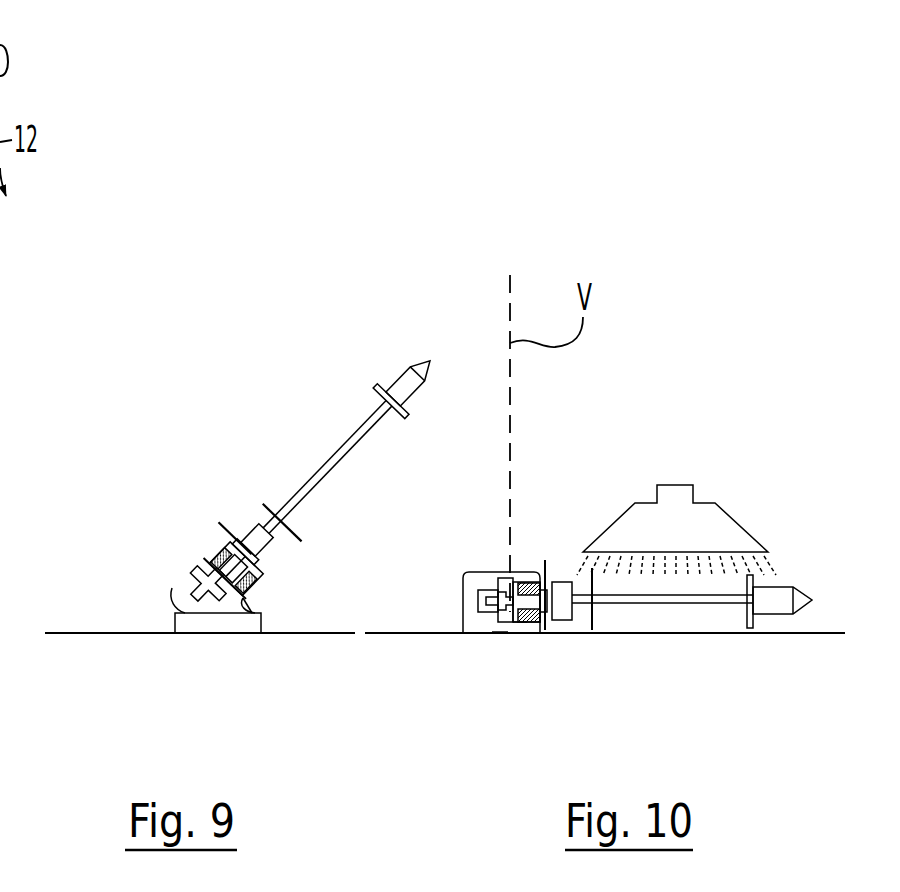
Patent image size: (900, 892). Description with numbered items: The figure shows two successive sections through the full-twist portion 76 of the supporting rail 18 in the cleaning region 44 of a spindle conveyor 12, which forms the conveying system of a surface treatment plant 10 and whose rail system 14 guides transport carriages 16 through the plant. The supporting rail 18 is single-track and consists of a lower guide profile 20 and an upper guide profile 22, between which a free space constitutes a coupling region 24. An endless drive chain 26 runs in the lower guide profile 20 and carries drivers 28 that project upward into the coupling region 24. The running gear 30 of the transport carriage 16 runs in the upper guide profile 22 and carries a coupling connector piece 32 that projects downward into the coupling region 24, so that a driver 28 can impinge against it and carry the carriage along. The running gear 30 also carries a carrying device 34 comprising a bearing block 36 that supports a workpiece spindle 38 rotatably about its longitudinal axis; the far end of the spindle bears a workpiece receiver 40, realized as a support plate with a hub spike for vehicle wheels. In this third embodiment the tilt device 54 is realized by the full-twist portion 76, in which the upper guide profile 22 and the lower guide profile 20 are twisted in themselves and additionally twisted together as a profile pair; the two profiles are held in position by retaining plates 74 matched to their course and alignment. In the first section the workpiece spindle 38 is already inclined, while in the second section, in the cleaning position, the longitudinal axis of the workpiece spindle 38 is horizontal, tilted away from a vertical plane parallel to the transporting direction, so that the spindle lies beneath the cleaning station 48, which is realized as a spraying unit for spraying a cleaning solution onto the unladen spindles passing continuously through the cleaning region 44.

In FIG. 9, the surface treatment plant 10 is at (290, 138).
In FIG. 10, the surface treatment plant 10 is at (728, 167).
In FIG. 9, the spindle conveyor 12 is at (328, 213).
In FIG. 10, the spindle conveyor 12 is at (780, 243).
In FIG. 9, the rail system 14 is at (155, 633).
In FIG. 10, the rail system 14 is at (450, 590).
In FIG. 9, the transport carriage 16 is at (246, 513).
In FIG. 10, the transport carriage 16 is at (580, 553).
In FIG. 9, the supporting rail 18 is at (250, 606).
In FIG. 10, the supporting rail 18 is at (530, 628).
In FIG. 9, the lower guide profile 20 is at (197, 580).
In FIG. 10, the lower guide profile 20 is at (503, 578).
In FIG. 9, the upper guide profile 22 is at (226, 546).
In FIG. 10, the upper guide profile 22 is at (561, 574).
In FIG. 9, the coupling region 24 is at (205, 562).
In FIG. 10, the coupling region 24 is at (505, 572).
In FIG. 9, the drive chain 26 is at (223, 605).
In FIG. 10, the drive chain 26 is at (470, 602).
In FIG. 9, the driver 28 is at (248, 612).
In FIG. 9, the running gear 30 is at (270, 565).
In FIG. 10, the running gear 30 is at (520, 627).
In FIG. 9, the coupling connector piece 32 is at (255, 596).
In FIG. 10, the coupling connector piece 32 is at (522, 580).
In FIG. 9, the carrying device 34 is at (282, 487).
In FIG. 10, the carrying device 34 is at (658, 607).
In FIG. 9, the bearing block 36 is at (298, 540).
In FIG. 10, the bearing block 36 is at (562, 601).
In FIG. 9, the workpiece spindle 38 is at (373, 432).
In FIG. 10, the workpiece spindle 38 is at (722, 605).
In FIG. 9, the workpiece receiver 40 is at (398, 366).
In FIG. 10, the workpiece receiver 40 is at (795, 586).
In FIG. 9, the cleaning region 44 is at (195, 150).
In FIG. 10, the cleaning region 44 is at (580, 155).
In FIG. 10, the cleaning station 48 is at (734, 518).
In FIG. 9, the tilt device 54 is at (158, 487).
In FIG. 10, the tilt device 54 is at (497, 468).
In FIG. 9, the retaining plates 74 is at (196, 604).
In FIG. 10, the retaining plates 74 is at (500, 632).
In FIG. 9, the full-twist portion 76 is at (247, 610).
In FIG. 10, the full-twist portion 76 is at (504, 626).